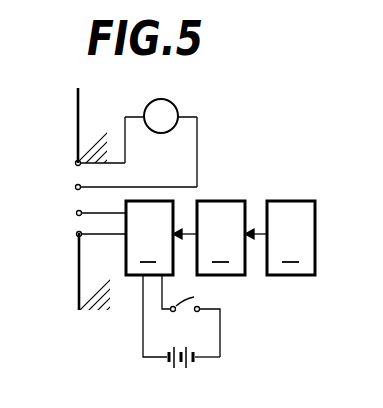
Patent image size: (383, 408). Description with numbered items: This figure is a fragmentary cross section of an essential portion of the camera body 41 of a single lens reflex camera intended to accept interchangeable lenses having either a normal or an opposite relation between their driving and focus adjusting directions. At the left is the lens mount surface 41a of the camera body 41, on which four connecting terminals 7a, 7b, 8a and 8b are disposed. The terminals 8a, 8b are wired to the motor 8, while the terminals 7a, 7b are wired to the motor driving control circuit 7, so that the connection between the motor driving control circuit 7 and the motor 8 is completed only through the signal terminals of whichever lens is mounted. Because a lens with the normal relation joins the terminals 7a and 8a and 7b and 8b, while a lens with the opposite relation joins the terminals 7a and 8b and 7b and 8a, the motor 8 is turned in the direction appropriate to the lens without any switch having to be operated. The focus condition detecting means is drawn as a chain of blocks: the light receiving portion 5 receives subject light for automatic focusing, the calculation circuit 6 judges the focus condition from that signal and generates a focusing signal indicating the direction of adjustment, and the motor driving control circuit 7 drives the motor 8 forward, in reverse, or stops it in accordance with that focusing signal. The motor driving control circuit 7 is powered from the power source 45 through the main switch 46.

The camera body 41 is at (76, 99).
The lens mount surface 41a is at (78, 110).
The motor 8 is at (172, 104).
The connecting terminal 8a is at (75, 163).
The connecting terminal 8b is at (75, 187).
The motor driving control circuit 7 is at (149, 238).
The connecting terminal 7a is at (76, 235).
The connecting terminal 7b is at (76, 213).
The calculation circuit 6 is at (209, 238).
The light receiving portion 5 is at (280, 238).
The main switch 46 is at (190, 300).
The power source 45 is at (190, 367).